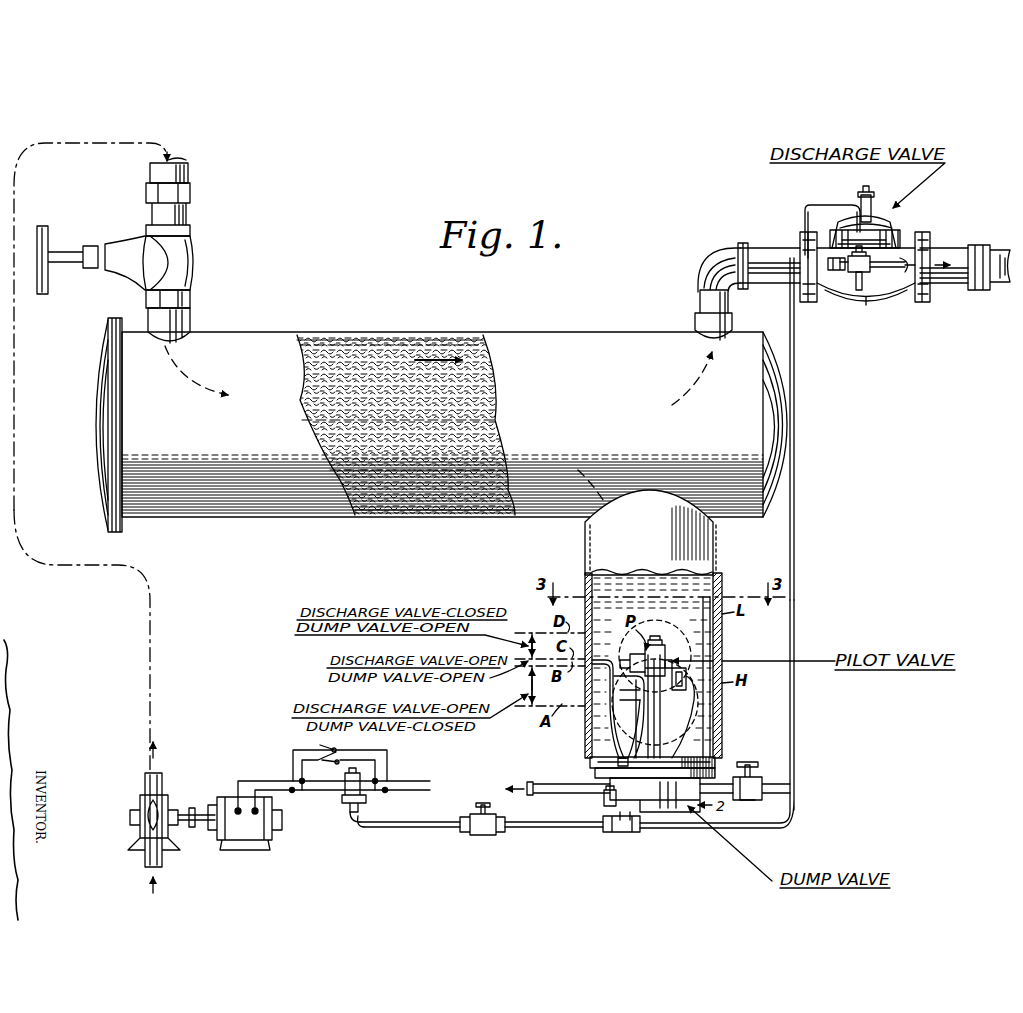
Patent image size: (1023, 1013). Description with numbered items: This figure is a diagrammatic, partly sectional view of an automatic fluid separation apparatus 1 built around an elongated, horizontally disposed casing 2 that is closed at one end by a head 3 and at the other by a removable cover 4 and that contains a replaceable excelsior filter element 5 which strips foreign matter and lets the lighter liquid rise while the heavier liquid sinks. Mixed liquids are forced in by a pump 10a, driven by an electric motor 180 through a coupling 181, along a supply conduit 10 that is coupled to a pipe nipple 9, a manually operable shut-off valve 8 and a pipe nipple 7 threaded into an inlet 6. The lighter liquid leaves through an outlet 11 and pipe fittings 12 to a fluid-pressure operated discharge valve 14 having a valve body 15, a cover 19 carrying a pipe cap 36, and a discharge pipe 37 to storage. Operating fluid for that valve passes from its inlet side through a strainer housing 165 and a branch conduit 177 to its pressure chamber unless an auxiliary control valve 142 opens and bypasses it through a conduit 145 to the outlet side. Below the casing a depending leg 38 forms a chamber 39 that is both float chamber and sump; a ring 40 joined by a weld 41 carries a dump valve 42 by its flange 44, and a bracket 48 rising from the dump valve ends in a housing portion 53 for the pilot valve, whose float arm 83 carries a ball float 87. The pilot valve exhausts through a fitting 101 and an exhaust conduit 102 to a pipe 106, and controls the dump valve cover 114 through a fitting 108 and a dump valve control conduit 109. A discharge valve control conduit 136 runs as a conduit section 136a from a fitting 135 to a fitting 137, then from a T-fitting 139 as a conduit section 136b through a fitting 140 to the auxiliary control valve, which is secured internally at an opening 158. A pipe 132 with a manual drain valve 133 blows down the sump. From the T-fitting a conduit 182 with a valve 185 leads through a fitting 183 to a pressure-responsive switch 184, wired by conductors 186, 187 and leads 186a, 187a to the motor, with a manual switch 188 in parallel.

The fluid separation apparatus 1 is at (370, 331).
The casing 2 is at (250, 519).
The head 3 is at (783, 437).
The removable cover 4 is at (96, 384).
The filter element 5 is at (421, 518).
The inlet 6 is at (191, 321).
The pipe nipple 7 is at (191, 301).
The shut-off valve 8 is at (193, 260).
The pipe nipple 9 is at (187, 218).
The supply conduit 10 is at (186, 174).
The pump 10a is at (140, 806).
The outlet 11 is at (695, 322).
The pipe fittings 12 is at (762, 244).
The discharge valve 14 is at (880, 297).
The valve body 15 is at (918, 300).
The cover 19 is at (906, 240).
The pipe cap 36 is at (870, 193).
The discharge pipe 37 is at (950, 250).
The leg 38 is at (719, 596).
The chamber 39 is at (723, 638).
The ring 40 is at (721, 764).
The weld 41 is at (722, 773).
The dump valve 42 is at (607, 799).
The flange 44 is at (596, 775).
The bracket 48 is at (663, 751).
The housing portion 53 is at (668, 702).
The float arm 83 is at (722, 702).
The ball float 87 is at (656, 642).
The fitting 101 is at (603, 684).
The exhaust conduit 102 is at (624, 732).
The pipe 106 is at (530, 785).
The fitting 108 is at (618, 700).
The dump valve control conduit 109 is at (640, 750).
The cover 114 is at (660, 816).
The pipe 132 is at (806, 786).
The drain valve 133 is at (750, 800).
The fitting 135 is at (622, 652).
The discharge valve control conduit 136 is at (797, 529).
The conduit section 136a is at (610, 664).
The conduit section 136b is at (795, 358).
The fitting 137 is at (616, 762).
The T-fitting 139 is at (620, 833).
The fitting 140 is at (870, 261).
The auxiliary control valve 142 is at (860, 292).
The conduit 145 is at (886, 296).
The opening 158 is at (668, 656).
The strainer housing 165 is at (840, 272).
The branch conduit 177 is at (838, 213).
The electric motor 180 is at (247, 851).
The coupling 181 is at (193, 807).
The conduit 182 is at (434, 829).
The fitting 183 is at (348, 815).
The pressure-responsive switch 184 is at (368, 797).
The valve 185 is at (480, 836).
The conductor 186 is at (405, 781).
The lead 186a is at (250, 780).
The conductor 187 is at (408, 791).
The lead 187a is at (292, 792).
The switch 188 is at (315, 748).